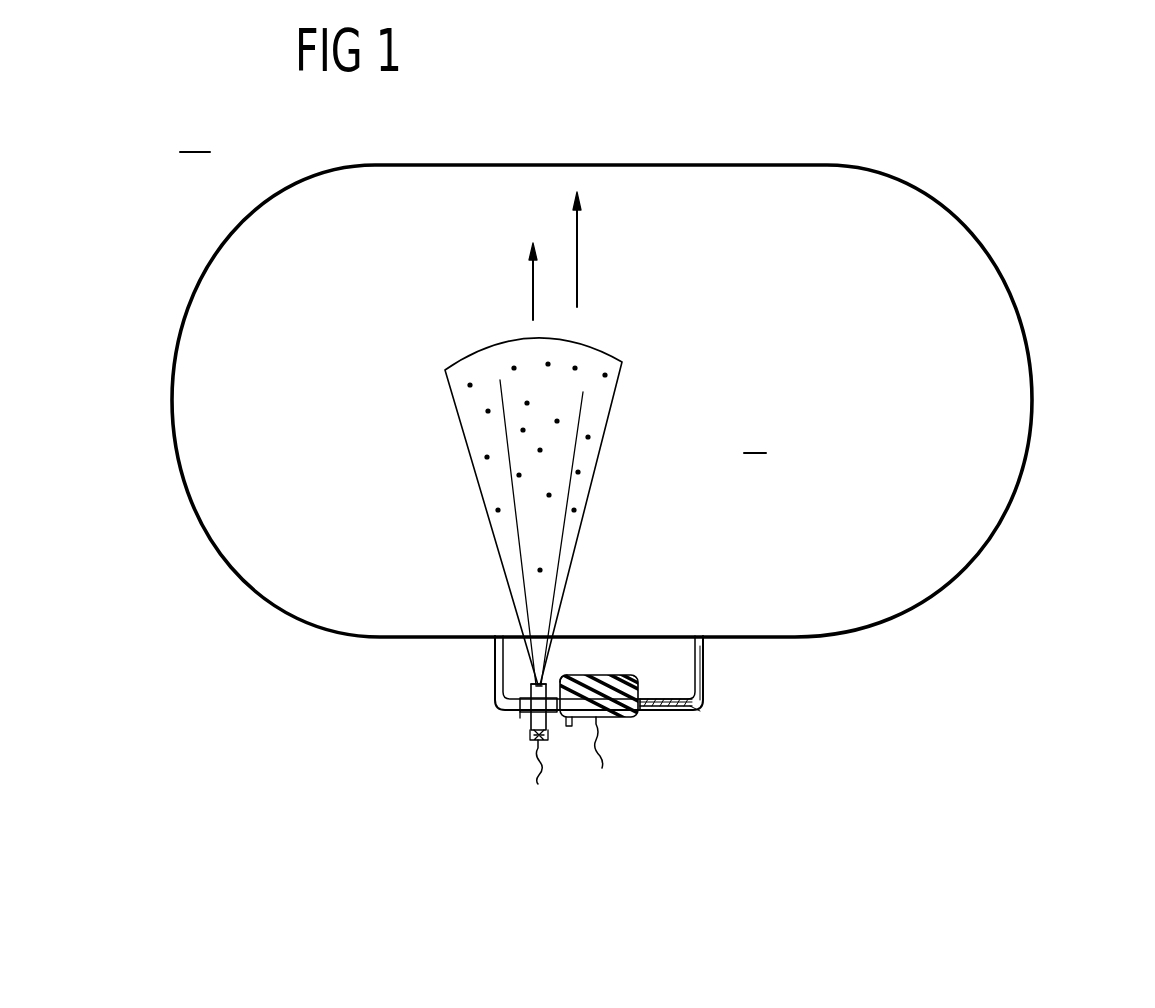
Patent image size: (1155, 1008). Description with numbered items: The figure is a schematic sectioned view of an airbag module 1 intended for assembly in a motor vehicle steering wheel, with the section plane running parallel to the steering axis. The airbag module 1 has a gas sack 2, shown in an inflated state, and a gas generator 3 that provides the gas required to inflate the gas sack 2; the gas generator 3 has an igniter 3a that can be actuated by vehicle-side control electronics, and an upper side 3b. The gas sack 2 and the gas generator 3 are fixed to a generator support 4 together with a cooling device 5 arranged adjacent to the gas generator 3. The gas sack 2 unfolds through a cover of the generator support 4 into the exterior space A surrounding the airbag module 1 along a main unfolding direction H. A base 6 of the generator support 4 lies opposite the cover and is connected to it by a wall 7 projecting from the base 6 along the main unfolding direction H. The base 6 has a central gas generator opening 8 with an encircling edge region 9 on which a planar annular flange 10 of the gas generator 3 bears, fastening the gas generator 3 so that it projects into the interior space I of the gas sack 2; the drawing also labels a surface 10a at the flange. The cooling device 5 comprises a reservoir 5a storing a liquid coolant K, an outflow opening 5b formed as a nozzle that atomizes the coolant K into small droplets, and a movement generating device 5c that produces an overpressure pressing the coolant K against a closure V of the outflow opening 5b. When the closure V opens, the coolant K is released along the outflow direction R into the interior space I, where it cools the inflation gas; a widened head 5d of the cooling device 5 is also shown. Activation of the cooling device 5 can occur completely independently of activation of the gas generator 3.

The airbag module 1 is at (637, 400).
The gas sack 2 is at (1018, 310).
The gas generator 3 is at (623, 715).
The igniter 3a is at (608, 716).
The upper side of the gas generator 3b is at (620, 675).
The generator support 4 is at (702, 682).
The cooling device 5 is at (527, 723).
The reservoir 5a is at (520, 713).
The outflow opening 5b is at (541, 690).
The movement generating device 5c is at (535, 737).
The head of the cooling device 5d is at (535, 690).
The base 6 is at (695, 712).
The wall 7 is at (495, 673).
The gas generator opening 8 is at (569, 720).
The edge region 9 is at (645, 713).
The flange 10 is at (662, 698).
The plate surface 10a is at (700, 694).
The exterior space A is at (195, 130).
The interior space I is at (755, 434).
The coolant K is at (555, 458).
The closure V is at (542, 687).
The outflow direction R is at (520, 281).
The main unfolding direction H is at (577, 260).